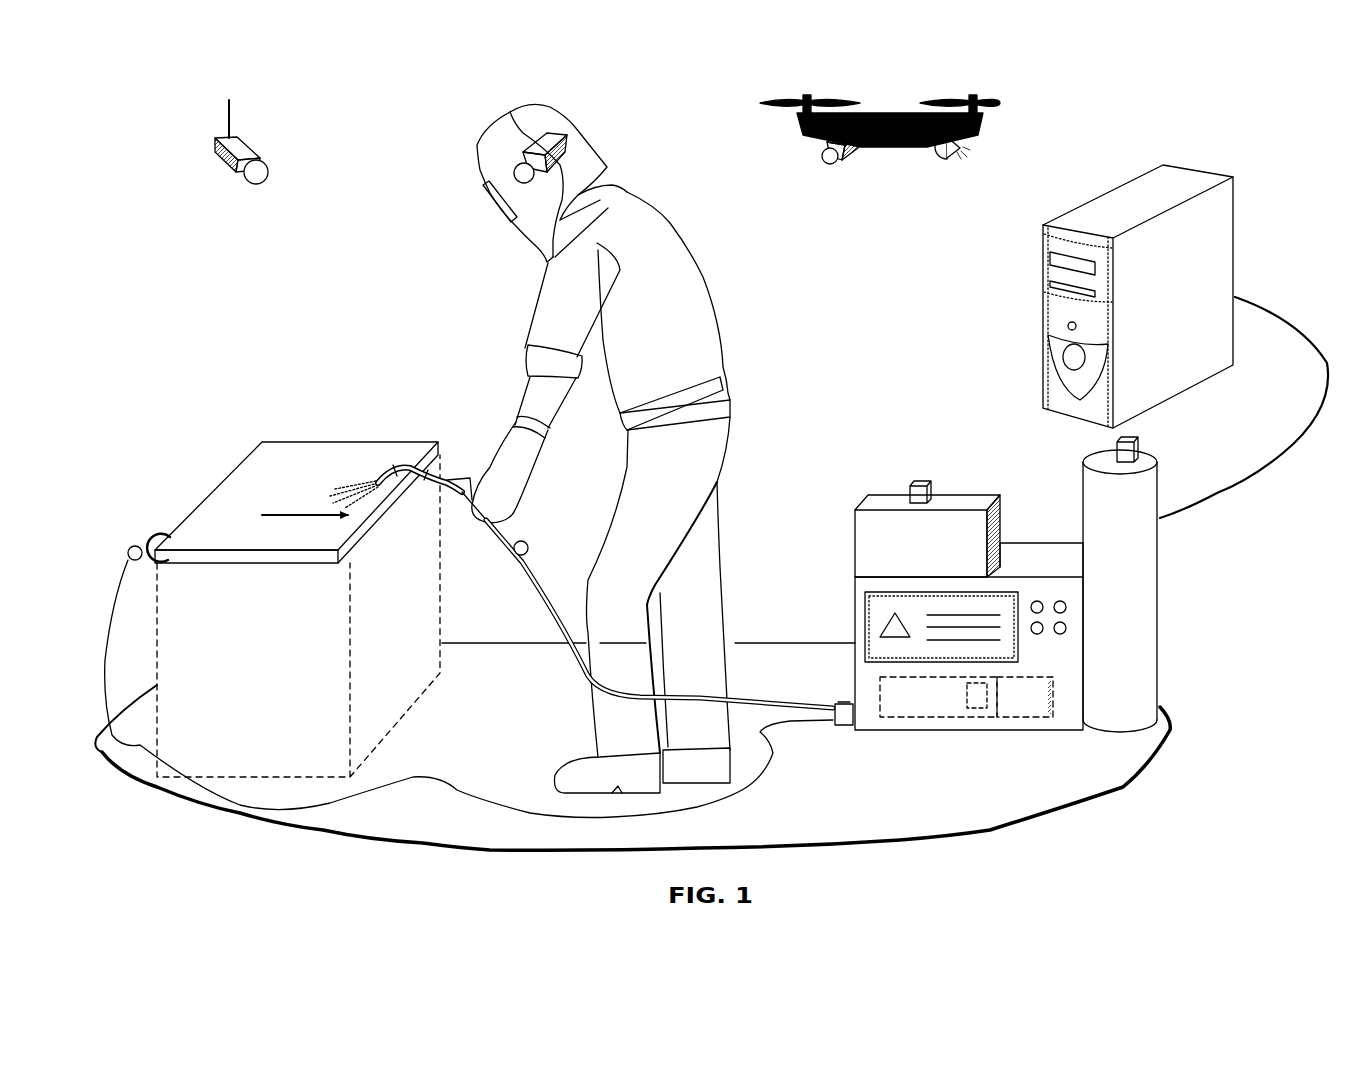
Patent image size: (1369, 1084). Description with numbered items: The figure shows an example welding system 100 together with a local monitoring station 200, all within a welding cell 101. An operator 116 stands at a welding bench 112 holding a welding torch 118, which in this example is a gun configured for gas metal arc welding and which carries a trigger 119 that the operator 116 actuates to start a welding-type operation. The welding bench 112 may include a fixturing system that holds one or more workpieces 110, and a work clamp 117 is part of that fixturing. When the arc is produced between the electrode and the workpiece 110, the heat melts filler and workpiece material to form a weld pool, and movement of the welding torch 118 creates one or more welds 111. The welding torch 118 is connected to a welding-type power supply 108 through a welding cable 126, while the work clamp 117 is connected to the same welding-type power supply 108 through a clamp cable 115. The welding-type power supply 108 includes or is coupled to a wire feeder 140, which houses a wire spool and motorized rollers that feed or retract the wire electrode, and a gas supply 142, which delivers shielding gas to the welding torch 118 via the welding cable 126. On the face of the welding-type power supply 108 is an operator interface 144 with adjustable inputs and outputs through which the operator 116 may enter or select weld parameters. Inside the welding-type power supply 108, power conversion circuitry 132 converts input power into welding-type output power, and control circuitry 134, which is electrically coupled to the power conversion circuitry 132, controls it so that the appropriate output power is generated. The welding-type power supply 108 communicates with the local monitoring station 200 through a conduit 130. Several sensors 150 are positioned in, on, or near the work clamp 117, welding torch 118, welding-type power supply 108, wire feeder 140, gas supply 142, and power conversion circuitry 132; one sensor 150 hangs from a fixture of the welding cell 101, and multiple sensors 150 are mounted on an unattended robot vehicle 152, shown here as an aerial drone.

The welding system 100 is at (135, 155).
The welding cell 101 is at (853, 827).
The welding-type power supply 108 is at (997, 600).
The workpiece 110 is at (205, 490).
The weld 111 is at (333, 508).
The welding bench 112 is at (297, 609).
The clamp cable 115 is at (448, 783).
The operator 116 is at (650, 197).
The work clamp 117 is at (140, 548).
The welding torch 118 is at (462, 470).
The trigger 119 is at (463, 507).
The welding cable 126 is at (785, 700).
The conduit 130 is at (1219, 494).
The power conversion circuitry 132 is at (937, 718).
The control circuitry 134 is at (1025, 718).
The wire feeder 140 is at (927, 536).
The gas supply 142 is at (1120, 591).
The operator interface 144 is at (1017, 583).
The sensor 150 is at (262, 152).
The unattended robot vehicle 152 is at (1030, 122).
The local monitoring station 200 is at (1043, 308).